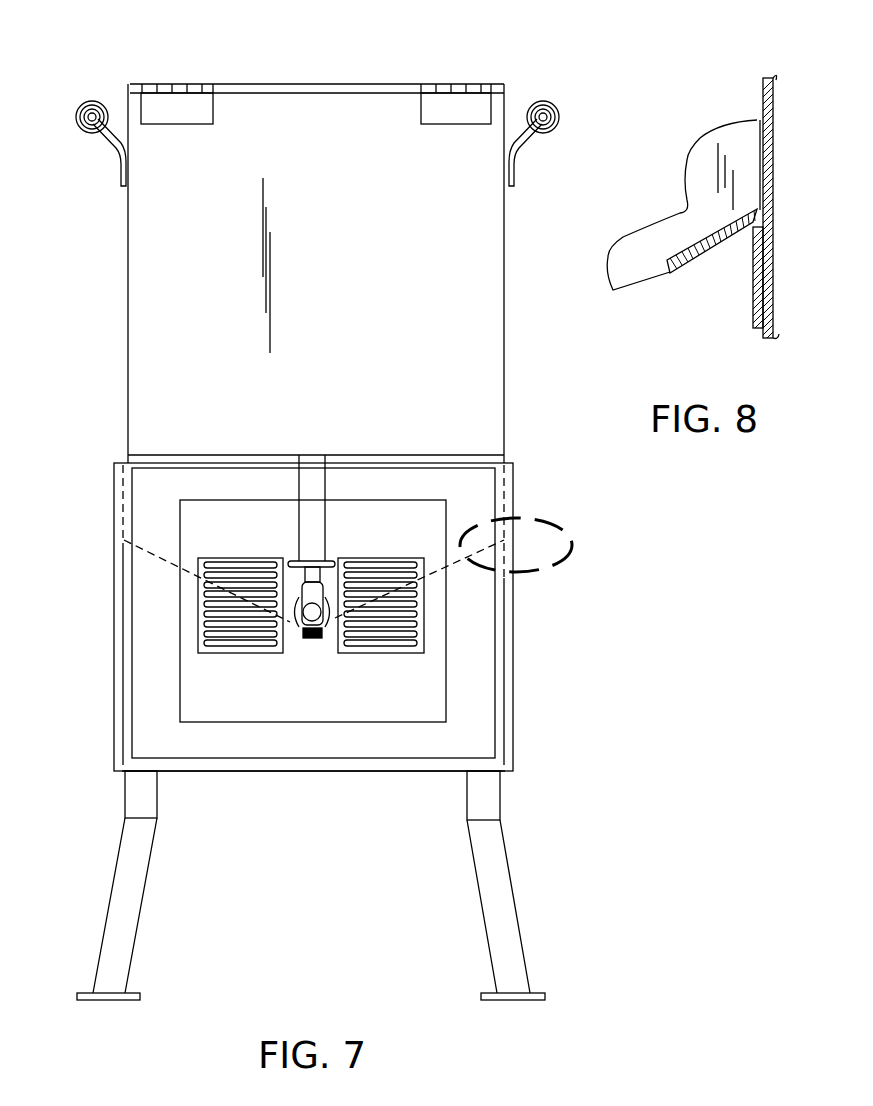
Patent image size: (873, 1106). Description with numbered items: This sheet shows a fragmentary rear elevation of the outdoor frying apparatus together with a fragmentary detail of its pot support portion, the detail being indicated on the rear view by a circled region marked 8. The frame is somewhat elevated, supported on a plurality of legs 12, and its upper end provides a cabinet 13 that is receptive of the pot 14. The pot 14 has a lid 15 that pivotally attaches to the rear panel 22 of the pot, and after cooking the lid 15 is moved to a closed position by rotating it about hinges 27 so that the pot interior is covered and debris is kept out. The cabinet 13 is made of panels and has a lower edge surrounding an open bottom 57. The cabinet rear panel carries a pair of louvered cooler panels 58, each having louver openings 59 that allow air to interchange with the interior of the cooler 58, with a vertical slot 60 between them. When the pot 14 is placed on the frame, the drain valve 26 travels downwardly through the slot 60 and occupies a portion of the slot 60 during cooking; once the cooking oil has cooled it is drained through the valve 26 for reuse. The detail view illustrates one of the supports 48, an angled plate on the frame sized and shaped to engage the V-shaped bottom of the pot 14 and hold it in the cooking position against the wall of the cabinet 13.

In FIG. 7, the legs 12 is at (110, 920).
In FIG. 7, the cabinet 13 is at (155, 708).
In FIG. 8, the cabinet 13 is at (772, 160).
In FIG. 7, the pot 14 is at (127, 395).
In FIG. 8, the pot 14 is at (702, 175).
In FIG. 7, the lid 15 is at (338, 82).
In FIG. 7, the rear panel 22 is at (403, 313).
In FIG. 7, the valve 26 is at (302, 560).
In FIG. 7, the hinges 27 is at (163, 112).
In FIG. 8, the supports 48 is at (708, 264).
In FIG. 7, the open bottom 57 is at (358, 781).
In FIG. 7, the louvered cooler panel 58 is at (428, 710).
In FIG. 7, the louver openings 59 is at (208, 650).
In FIG. 7, the vertical slot 60 is at (316, 530).
In FIG. 7, the detail view circle 8 is at (532, 508).